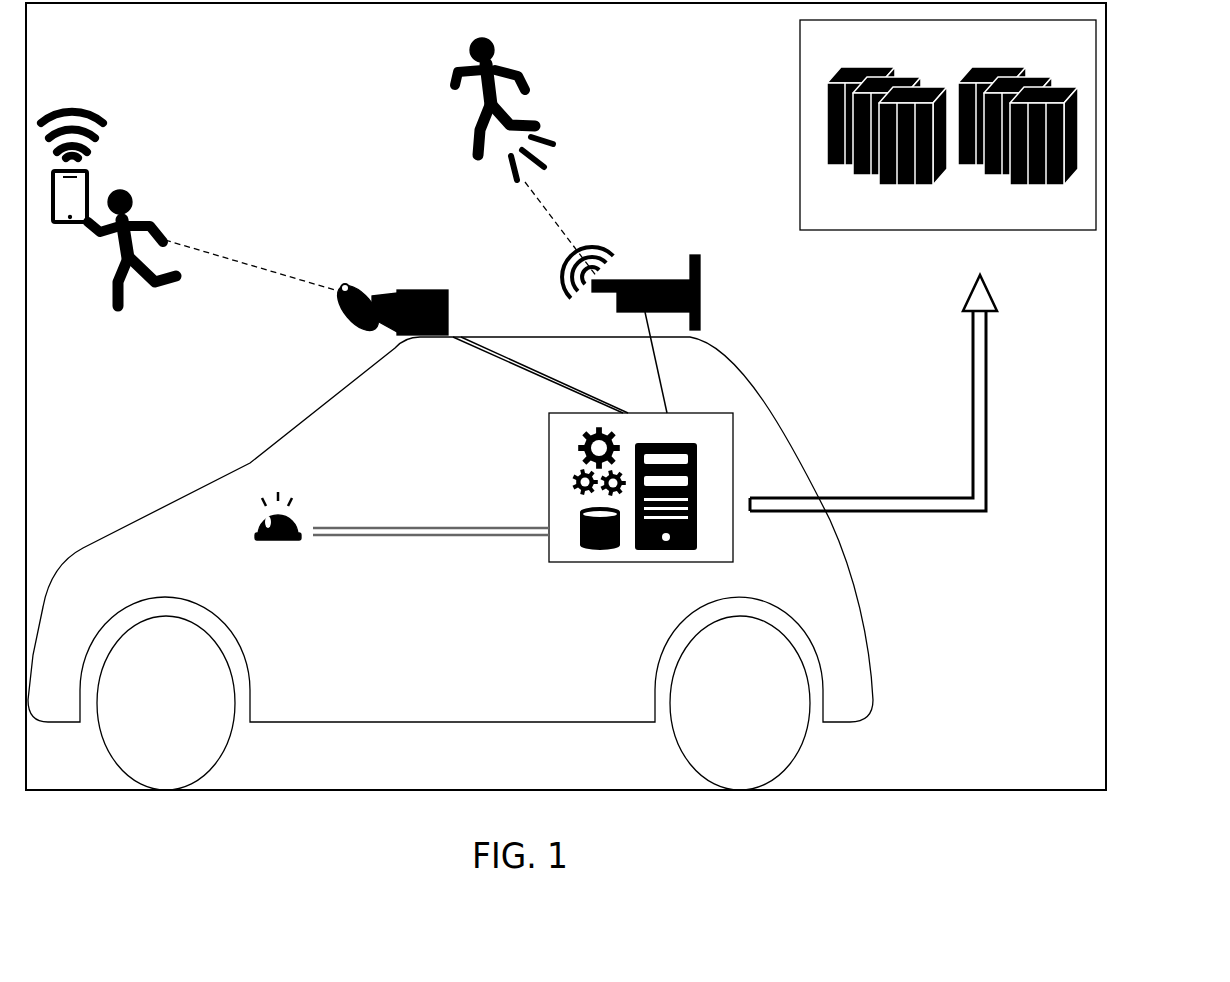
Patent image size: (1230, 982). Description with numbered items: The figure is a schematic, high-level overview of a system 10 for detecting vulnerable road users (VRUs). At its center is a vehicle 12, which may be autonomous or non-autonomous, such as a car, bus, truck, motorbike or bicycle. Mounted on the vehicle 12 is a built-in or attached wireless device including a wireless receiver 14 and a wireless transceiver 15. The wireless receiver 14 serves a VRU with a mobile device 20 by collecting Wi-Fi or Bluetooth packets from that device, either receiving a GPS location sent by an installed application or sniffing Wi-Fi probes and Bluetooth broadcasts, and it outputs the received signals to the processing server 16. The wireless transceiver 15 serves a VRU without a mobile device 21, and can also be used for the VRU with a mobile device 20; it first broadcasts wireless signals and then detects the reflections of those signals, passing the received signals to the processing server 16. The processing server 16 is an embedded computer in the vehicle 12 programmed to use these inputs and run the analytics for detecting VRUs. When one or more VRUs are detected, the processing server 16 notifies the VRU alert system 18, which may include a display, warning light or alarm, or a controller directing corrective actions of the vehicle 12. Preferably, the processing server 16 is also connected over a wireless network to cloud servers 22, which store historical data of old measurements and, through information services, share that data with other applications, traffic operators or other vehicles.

The system 10 is at (1146, 88).
The vehicle 12 is at (816, 563).
The wireless receiver 14 is at (400, 228).
The wireless transceiver 15 is at (672, 246).
The processing server 16 is at (552, 571).
The VRU alert system 18 is at (313, 486).
The VRU with a mobile device 20 is at (96, 262).
The VRU without a mobile device 21 is at (438, 50).
The cloud servers 22 is at (812, 82).